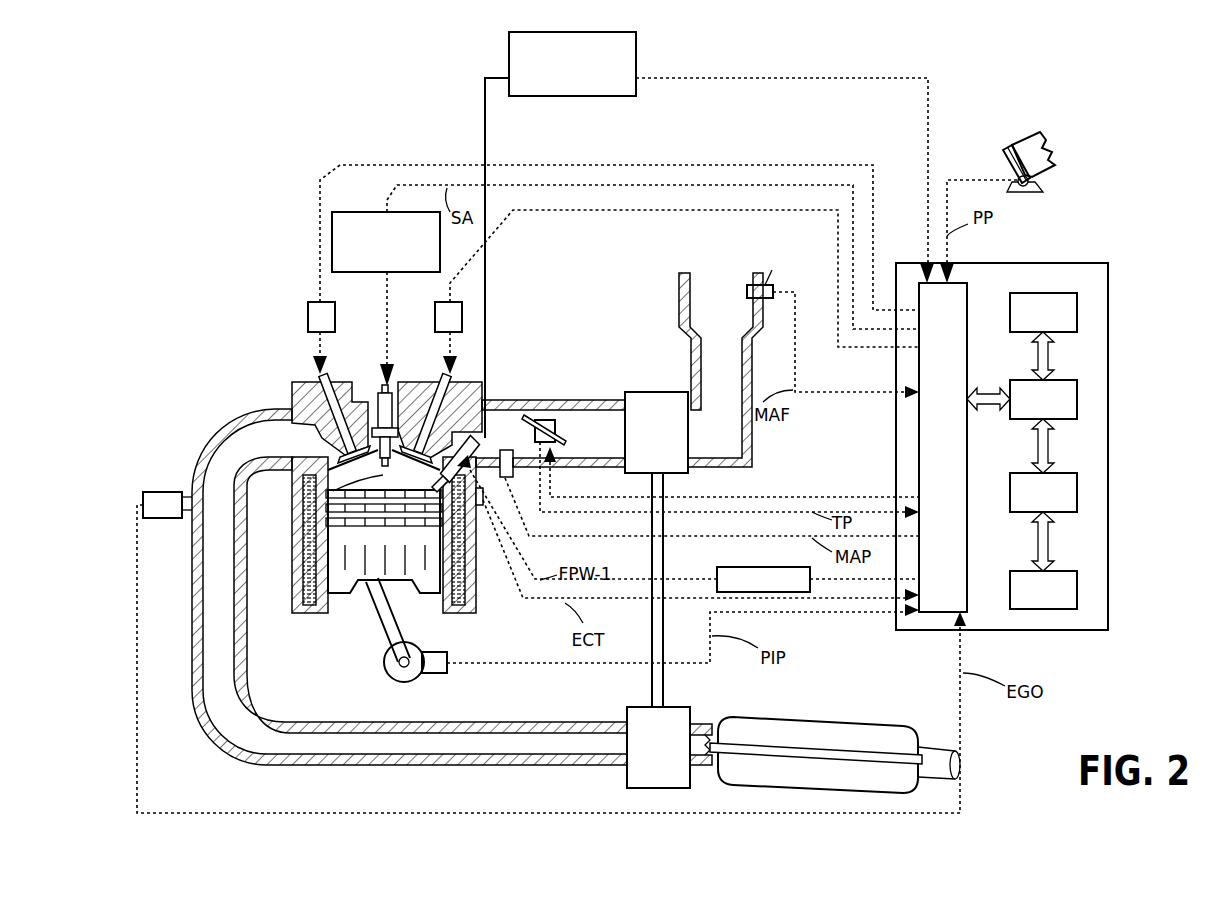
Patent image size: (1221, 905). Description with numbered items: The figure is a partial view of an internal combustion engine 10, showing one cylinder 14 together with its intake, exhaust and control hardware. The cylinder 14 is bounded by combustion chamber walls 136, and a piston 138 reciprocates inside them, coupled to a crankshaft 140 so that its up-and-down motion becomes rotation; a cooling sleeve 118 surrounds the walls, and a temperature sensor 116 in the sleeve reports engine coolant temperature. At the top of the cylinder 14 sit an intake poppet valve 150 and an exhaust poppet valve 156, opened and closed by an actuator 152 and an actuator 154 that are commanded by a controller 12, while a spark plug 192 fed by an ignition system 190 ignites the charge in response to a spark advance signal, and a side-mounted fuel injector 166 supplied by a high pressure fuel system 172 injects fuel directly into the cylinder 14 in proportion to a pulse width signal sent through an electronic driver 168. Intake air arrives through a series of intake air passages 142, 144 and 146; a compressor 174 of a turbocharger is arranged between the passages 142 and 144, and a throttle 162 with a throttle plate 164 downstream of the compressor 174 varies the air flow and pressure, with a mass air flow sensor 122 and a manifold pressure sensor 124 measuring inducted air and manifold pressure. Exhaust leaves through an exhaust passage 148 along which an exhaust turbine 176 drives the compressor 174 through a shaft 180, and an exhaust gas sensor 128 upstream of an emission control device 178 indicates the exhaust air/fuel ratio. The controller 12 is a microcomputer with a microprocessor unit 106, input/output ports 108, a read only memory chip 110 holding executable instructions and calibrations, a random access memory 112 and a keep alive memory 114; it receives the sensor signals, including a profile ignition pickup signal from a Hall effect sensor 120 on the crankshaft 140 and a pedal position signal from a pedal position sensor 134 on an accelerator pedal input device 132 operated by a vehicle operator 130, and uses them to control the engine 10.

The internal combustion engine 10 is at (196, 139).
The controller 12 is at (1108, 265).
The cylinder 14 is at (333, 490).
The microprocessor unit 106 is at (1077, 393).
The input/output ports 108 is at (967, 290).
The read only memory chip 110 is at (1077, 307).
The random access memory 112 is at (1077, 491).
The keep alive memory 114 is at (1077, 590).
The temperature sensor 116 is at (486, 505).
The cooling sleeve 118 is at (475, 610).
The Hall effect sensor 120 is at (440, 675).
The mass air flow sensor 122 is at (773, 283).
The manifold pressure sensor 124 is at (507, 478).
The exhaust gas sensor 128 is at (143, 500).
The vehicle operator 130 is at (1052, 150).
The input device 132 is at (1008, 158).
The pedal position sensor 134 is at (1040, 186).
The combustion chamber walls 136 is at (333, 617).
The piston 138 is at (367, 600).
The crankshaft 140 is at (395, 680).
The intake air passage 142 is at (711, 316).
The intake air passage 144 is at (576, 442).
The intake air passage 146 is at (486, 442).
The exhaust passage 148 is at (251, 451).
The intake poppet valve 150 is at (425, 448).
The actuator 152 is at (437, 312).
The actuator 154 is at (312, 300).
The exhaust poppet valve 156 is at (345, 452).
The throttle 162 is at (540, 416).
The throttle plate 164 is at (537, 420).
The fuel injector 166 is at (574, 508).
The electronic driver 168 is at (722, 567).
The high pressure fuel system 172 is at (636, 42).
The compressor 174 is at (652, 392).
The exhaust turbine 176 is at (628, 775).
The emission control device 178 is at (880, 724).
The shaft 180 is at (656, 683).
The ignition system 190 is at (345, 212).
The spark plug 192 is at (382, 400).